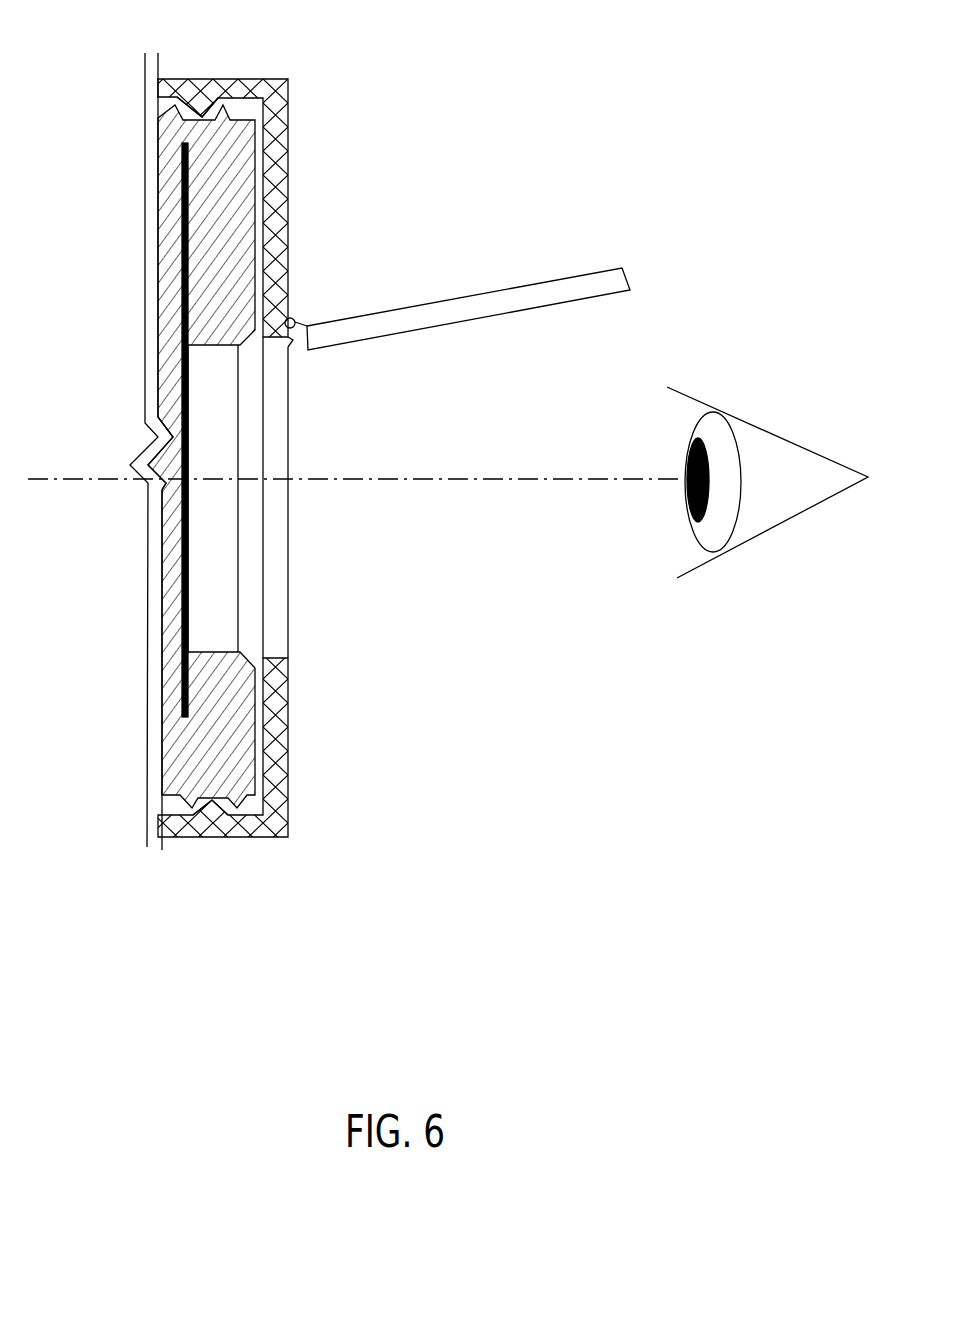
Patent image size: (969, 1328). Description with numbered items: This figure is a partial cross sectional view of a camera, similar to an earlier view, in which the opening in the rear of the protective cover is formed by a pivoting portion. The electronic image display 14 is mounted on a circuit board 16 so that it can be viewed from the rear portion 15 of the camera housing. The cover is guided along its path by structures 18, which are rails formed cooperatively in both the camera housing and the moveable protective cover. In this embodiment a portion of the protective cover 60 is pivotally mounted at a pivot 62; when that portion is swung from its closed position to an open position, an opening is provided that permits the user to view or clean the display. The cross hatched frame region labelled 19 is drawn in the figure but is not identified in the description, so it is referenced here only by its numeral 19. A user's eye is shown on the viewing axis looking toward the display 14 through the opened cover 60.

The electronic image display 14 is at (230, 597).
The rear portion 15 is at (254, 172).
The circuit board 16 is at (183, 386).
The structures 18 is at (231, 102).
The housing frame 19 is at (288, 100).
The protective cover 60 is at (477, 310).
The pivot 62 is at (295, 320).